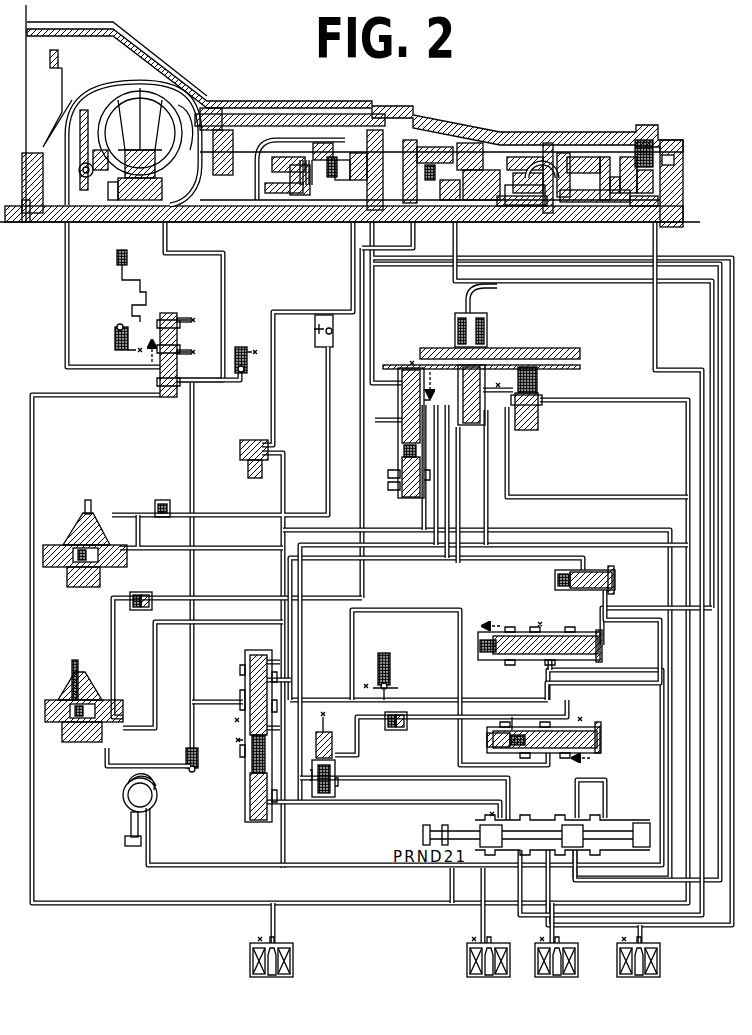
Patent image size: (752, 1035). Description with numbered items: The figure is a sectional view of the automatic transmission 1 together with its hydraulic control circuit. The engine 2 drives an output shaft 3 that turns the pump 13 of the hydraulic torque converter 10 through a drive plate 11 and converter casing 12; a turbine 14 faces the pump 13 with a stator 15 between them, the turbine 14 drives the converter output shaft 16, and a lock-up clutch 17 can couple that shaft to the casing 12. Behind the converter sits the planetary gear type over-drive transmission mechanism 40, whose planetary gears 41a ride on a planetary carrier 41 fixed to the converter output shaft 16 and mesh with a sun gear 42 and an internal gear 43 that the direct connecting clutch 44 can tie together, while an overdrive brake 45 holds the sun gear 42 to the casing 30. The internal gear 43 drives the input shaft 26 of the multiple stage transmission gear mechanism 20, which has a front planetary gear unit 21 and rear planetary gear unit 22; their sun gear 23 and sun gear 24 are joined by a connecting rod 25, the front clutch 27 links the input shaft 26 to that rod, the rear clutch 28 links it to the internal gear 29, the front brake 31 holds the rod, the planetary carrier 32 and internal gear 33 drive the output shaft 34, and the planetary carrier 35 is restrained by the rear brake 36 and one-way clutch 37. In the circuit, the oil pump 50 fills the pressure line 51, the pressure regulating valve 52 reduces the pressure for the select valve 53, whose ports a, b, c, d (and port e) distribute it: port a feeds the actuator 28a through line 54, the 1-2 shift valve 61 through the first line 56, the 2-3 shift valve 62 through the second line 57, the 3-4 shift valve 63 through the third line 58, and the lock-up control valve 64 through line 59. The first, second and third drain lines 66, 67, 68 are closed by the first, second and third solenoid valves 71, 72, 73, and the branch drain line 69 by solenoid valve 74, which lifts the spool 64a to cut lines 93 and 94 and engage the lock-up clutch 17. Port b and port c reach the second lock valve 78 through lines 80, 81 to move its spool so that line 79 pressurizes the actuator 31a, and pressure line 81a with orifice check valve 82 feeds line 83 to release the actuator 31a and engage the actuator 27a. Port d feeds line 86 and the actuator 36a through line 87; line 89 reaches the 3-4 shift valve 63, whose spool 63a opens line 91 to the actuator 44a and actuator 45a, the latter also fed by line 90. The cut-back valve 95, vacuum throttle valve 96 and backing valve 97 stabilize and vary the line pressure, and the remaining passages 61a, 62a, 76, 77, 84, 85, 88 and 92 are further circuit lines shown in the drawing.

The automatic transmission 1 is at (666, 132).
The engine 2 is at (27, 12).
The output shaft 3 is at (42, 213).
The hydraulic torque converter 10 is at (158, 83).
The drive plate 11 is at (66, 80).
The converter casing 12 is at (133, 92).
The pump 13 is at (172, 113).
The turbine 14 is at (99, 108).
The stator 15 is at (160, 173).
The converter output shaft 16 is at (93, 217).
The lock-up clutch 17 is at (62, 112).
The multiple stage transmission gear mechanism 20 is at (549, 141).
The front planetary gear unit 21 is at (531, 147).
The rear planetary gear unit 22 is at (596, 165).
The sun gear 23 is at (528, 210).
The sun gear 24 is at (576, 210).
The connecting rod 25 is at (553, 210).
The input shaft 26 is at (438, 212).
The front clutch 27 is at (432, 143).
The actuator 27a is at (383, 212).
The rear clutch 28 is at (515, 152).
The hydraulic actuator 28a is at (482, 212).
The internal gear 29 is at (518, 157).
The casing 30 is at (470, 147).
The front brake 31 is at (447, 147).
The actuator 31a is at (60, 695).
The planetary carrier 32 is at (508, 212).
The internal gear 33 is at (584, 163).
The output shaft 34 is at (602, 210).
The planetary carrier 35 is at (576, 151).
The rear brake 36 is at (639, 151).
The actuator 36a is at (664, 160).
The one-way clutch 37 is at (630, 210).
The planetary gear type over-drive transmission mechanism 40 is at (263, 146).
The planetary carrier 41 is at (305, 210).
The planetary gears 41a is at (235, 212).
The sun gear 42 is at (276, 210).
The internal gear 43 is at (282, 157).
The direct connecting clutch 44 is at (335, 140).
The actuator 44a is at (328, 210).
The overdrive brake 45 is at (308, 150).
The actuator 45a is at (64, 513).
The oil pump 50 is at (135, 798).
The pressure line 51 is at (197, 866).
The pressure regulating valve 52 is at (241, 781).
The select valve 53 is at (477, 821).
The line 54 is at (580, 283).
The first line 56 is at (553, 904).
The second line 57 is at (670, 916).
The third line 58 is at (708, 925).
The line 59 is at (197, 903).
The 1-2 shift valve 61 is at (605, 642).
The shift valve port 61a is at (596, 660).
The 2-3 shift valve 62 is at (604, 737).
The shift valve port 62a is at (600, 745).
The 3-4 shift valve 63 is at (387, 365).
The spool 63a is at (404, 404).
The lock-up control valve 64 is at (167, 401).
The spool 64a is at (178, 355).
The first drain line 66 is at (545, 940).
The second drain line 67 is at (560, 936).
The third drain line 68 is at (646, 942).
The branch drain line 69 is at (276, 924).
The first solenoid valve 71 is at (467, 960).
The second solenoid valve 72 is at (537, 962).
The third solenoid valve 73 is at (617, 962).
The solenoid valve 74 is at (250, 960).
The oil line 76 is at (630, 608).
The check valve line 77 is at (413, 612).
The second lock valve 78 is at (311, 795).
The line 79 is at (302, 652).
The line 80 is at (392, 778).
The line 81 is at (365, 803).
The pressure line 81a is at (512, 717).
The orifice check valve 82 is at (400, 727).
The line 83 is at (457, 745).
The oil line 84 is at (323, 598).
The oil line 85 is at (365, 575).
The line 86 is at (663, 806).
The line 87 is at (563, 698).
The oil line 88 is at (606, 782).
The line 89 is at (419, 589).
The line 90 is at (225, 552).
The line 91 is at (328, 367).
The oil line 92 is at (328, 483).
The line 93 is at (195, 655).
The line 94 is at (68, 300).
The cut-back valve 95 is at (614, 575).
The vacuum throttle valve 96 is at (482, 368).
The valve 97 is at (541, 428).
The port a is at (528, 850).
The port b is at (513, 820).
The port c is at (504, 850).
The port d is at (575, 850).
The manual valve port e is at (605, 822).